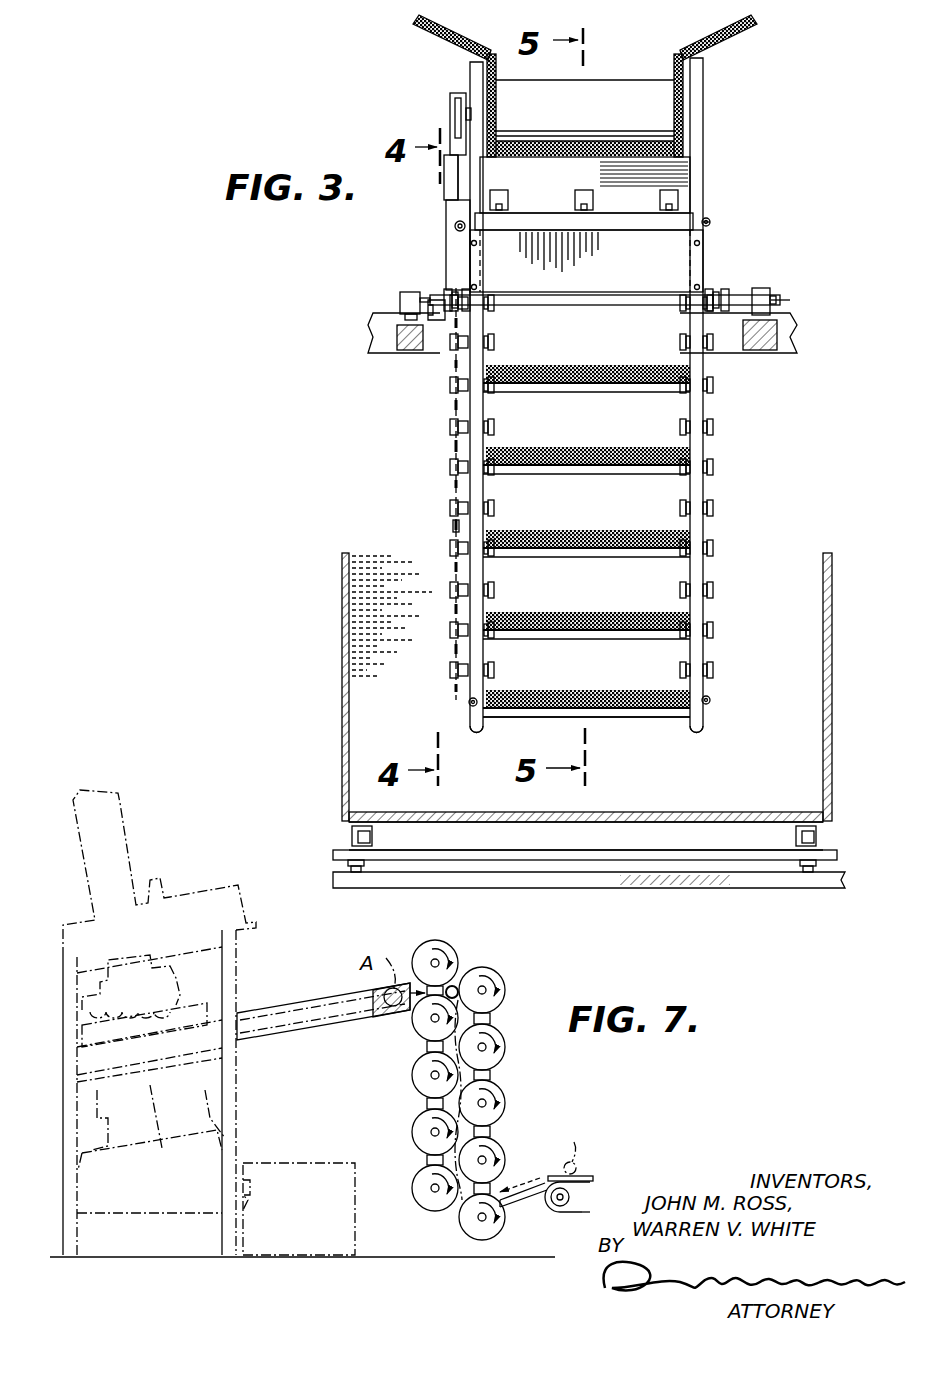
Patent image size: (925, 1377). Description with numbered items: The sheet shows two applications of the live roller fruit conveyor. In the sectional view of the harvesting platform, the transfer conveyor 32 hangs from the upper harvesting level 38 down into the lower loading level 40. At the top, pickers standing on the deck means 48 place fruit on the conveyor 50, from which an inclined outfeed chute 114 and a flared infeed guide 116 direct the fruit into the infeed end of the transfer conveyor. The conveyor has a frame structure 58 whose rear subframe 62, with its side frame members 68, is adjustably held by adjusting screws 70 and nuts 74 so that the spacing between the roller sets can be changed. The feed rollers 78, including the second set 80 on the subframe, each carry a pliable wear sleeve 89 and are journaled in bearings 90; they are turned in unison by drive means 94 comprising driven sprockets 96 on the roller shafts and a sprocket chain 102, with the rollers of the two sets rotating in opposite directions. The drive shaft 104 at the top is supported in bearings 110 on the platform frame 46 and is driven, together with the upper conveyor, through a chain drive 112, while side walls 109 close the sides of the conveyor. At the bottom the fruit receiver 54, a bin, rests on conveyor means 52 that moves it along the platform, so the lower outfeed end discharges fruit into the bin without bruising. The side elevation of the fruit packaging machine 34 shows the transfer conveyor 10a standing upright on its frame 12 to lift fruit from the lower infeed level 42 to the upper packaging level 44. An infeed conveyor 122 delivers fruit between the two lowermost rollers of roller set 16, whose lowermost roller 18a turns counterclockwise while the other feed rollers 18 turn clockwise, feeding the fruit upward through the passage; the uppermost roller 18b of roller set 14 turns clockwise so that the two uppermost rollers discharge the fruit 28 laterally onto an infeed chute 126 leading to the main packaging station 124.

In FIG. 3, the conveyor 50 is at (591, 114).
In FIG. 3, the inclined outfeed chute 114 is at (679, 123).
In FIG. 3, the flared infeed guide 116 is at (679, 170).
In FIG. 3, the upper harvesting level 38 is at (639, 434).
In FIG. 3, the nuts 74 is at (709, 218).
In FIG. 3, the adjusting screws 70 is at (712, 222).
In FIG. 3, the subframe 62 is at (620, 396).
In FIG. 3, the frame structure 58 is at (706, 728).
In FIG. 3, the side frame members 68 is at (472, 405).
In FIG. 3, the drive means 94 is at (425, 494).
In FIG. 3, the driven sprockets 96 is at (455, 462).
In FIG. 3, the sprocket chain 102 is at (452, 527).
In FIG. 3, the live roller fruit conveyor 32 is at (428, 426).
In FIG. 3, the bearings 90 is at (468, 700).
In FIG. 3, the feed rollers 78 is at (621, 561).
In FIG. 3, the wear sleeve 89 is at (532, 712).
In FIG. 3, the second set of feed rollers 80 is at (614, 712).
In FIG. 3, the shaft 104 is at (583, 279).
In FIG. 3, the bearings 110 is at (400, 300).
In FIG. 3, the deck means 48 is at (378, 316).
In FIG. 3, the frame 46 is at (800, 336).
In FIG. 3, the chain drive 112 is at (455, 128).
In FIG. 3, the side walls 109 is at (448, 240).
In FIG. 3, the lower loading level 40 is at (571, 720).
In FIG. 3, the fruit receiver 54 is at (343, 653).
In FIG. 3, the conveyor means 52 is at (828, 860).
In FIG. 7, the upper packaging level 44 is at (186, 1022).
In FIG. 7, the main packaging station 124 is at (120, 1040).
In FIG. 7, the infeed chute 126 is at (330, 1030).
In FIG. 7, the fruit packaging machine 34 is at (258, 1000).
In FIG. 7, the transfer conveyor 10a is at (492, 1099).
In FIG. 7, the roller set 14 is at (423, 1060).
In FIG. 7, the uppermost roller 18b is at (445, 948).
In FIG. 7, the roller set 16 is at (509, 1110).
In FIG. 7, the feed rollers 18 is at (505, 990).
In FIG. 7, the frame 12 is at (500, 1125).
In FIG. 7, the lowermost roller 18a is at (484, 1240).
In FIG. 7, the article 28 is at (462, 980).
In FIG. 7, the infeed conveyor 122 is at (585, 1178).
In FIG. 7, the lower infeed level 42 is at (586, 1214).